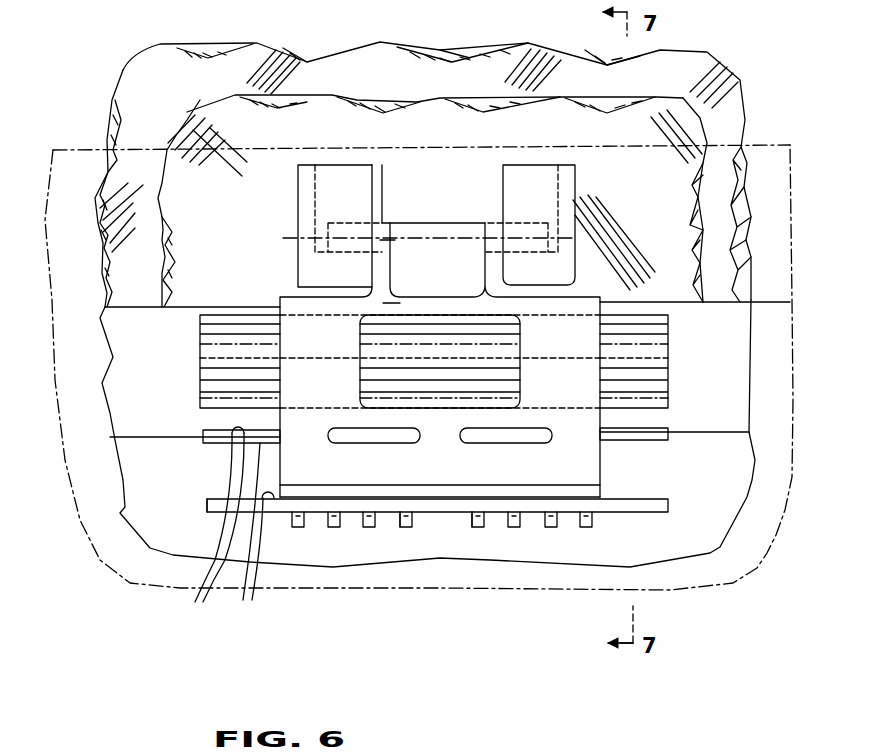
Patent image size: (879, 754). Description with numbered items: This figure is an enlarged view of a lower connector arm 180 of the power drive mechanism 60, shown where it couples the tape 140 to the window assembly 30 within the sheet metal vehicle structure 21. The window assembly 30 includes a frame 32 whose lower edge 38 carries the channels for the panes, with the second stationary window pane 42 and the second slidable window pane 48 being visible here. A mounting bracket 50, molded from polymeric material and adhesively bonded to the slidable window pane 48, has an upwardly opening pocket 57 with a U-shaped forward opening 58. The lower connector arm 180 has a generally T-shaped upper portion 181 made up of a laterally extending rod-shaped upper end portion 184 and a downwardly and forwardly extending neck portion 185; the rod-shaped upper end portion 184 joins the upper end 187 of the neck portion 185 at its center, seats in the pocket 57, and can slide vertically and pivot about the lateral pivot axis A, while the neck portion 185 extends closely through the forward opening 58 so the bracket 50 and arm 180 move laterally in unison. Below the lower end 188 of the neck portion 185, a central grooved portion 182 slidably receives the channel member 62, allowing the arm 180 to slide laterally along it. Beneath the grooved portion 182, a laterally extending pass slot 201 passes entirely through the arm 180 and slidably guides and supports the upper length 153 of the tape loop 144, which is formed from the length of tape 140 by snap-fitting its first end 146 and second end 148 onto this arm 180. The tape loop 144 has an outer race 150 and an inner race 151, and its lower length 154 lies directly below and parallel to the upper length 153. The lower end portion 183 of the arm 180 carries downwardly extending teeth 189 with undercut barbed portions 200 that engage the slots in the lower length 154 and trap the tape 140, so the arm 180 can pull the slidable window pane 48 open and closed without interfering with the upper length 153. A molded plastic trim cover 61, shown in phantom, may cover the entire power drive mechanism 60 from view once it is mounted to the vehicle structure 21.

The window assembly 30 is at (122, 65).
The second slidable window pane 48 is at (325, 115).
The second stationary window pane 42 is at (385, 65).
The upwardly opening pocket 57 is at (320, 165).
The upper end of neck portion 187 is at (381, 228).
The lower end of neck portion 188 is at (383, 303).
The mounting bracket 50 is at (302, 195).
The U-shaped forward opening 58 is at (506, 200).
The T-shaped upper portion 181 is at (381, 247).
The pivot axis A is at (567, 237).
The neck portion 185 is at (382, 275).
The rod-shaped upper end portion 184 is at (540, 248).
The channel member 62 is at (238, 325).
The lower connector arm 180 is at (592, 297).
The lower edge of the frame 38 is at (123, 300).
The frame 32 is at (125, 413).
The pass slot 201 is at (358, 430).
The central grooved portion 182 is at (563, 365).
The tape loop 144 is at (672, 431).
The upper length of the tape loop 153 is at (221, 437).
The teeth 189 is at (292, 528).
The tape 140 is at (627, 445).
The vehicle structure 21 is at (128, 528).
The lower end portion 183 is at (580, 465).
The lower length of the tape loop 154 is at (208, 517).
The outer race 150 is at (209, 530).
The inner race 151 is at (252, 538).
The undercut barbed portions 200 is at (575, 523).
The second end of the tape 148 is at (418, 520).
The first end of the tape 146 is at (453, 513).
The power drive mechanism 60 is at (505, 640).
The trim cover 61 is at (768, 577).